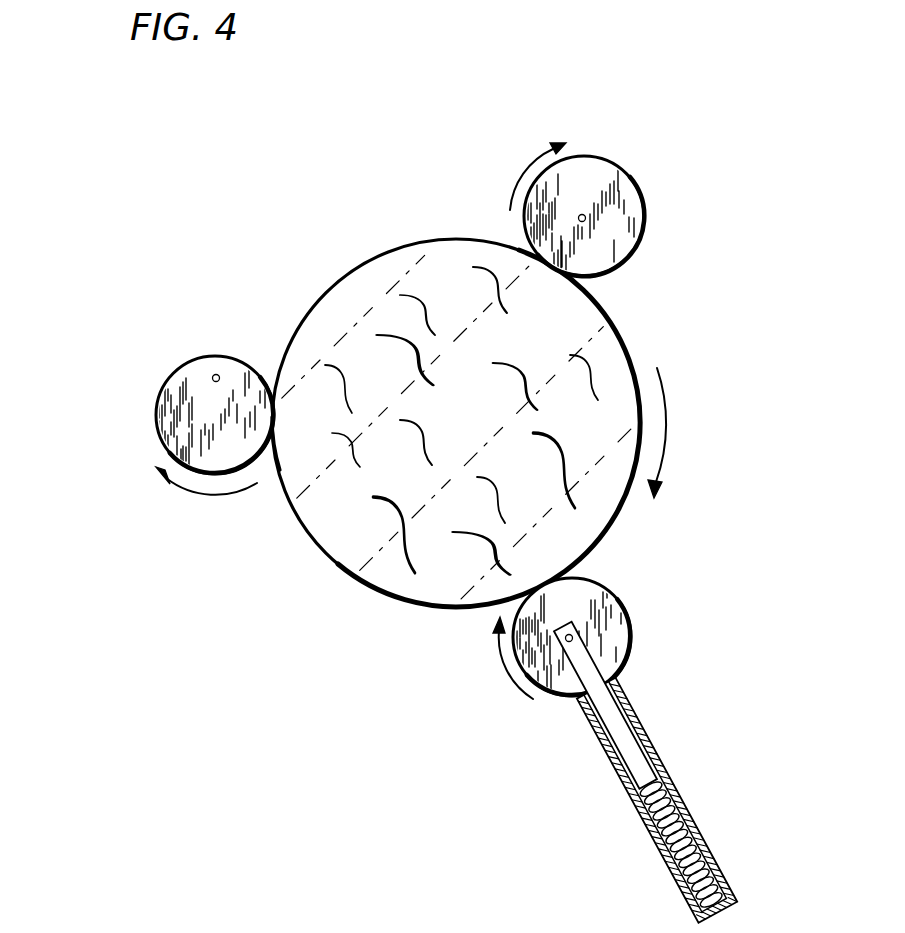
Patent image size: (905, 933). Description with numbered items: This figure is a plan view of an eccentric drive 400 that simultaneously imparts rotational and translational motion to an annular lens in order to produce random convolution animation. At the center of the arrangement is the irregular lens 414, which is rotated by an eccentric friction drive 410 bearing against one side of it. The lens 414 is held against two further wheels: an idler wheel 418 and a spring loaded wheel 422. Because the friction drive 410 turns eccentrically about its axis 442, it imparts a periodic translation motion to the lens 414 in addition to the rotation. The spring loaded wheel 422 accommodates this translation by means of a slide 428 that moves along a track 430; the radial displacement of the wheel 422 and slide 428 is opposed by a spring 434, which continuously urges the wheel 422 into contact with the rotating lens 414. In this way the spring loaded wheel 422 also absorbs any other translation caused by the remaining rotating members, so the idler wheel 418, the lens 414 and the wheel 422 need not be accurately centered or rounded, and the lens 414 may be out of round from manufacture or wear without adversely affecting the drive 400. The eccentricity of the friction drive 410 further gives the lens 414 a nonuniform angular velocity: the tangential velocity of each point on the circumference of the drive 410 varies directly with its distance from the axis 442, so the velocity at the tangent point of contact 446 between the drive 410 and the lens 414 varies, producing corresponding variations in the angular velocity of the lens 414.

The eccentric drive 400 is at (156, 437).
The eccentric friction drive 410 is at (158, 400).
The lens 414 is at (318, 302).
The idler wheel 418 is at (605, 158).
The spring loaded wheel 422 is at (612, 587).
The slide 428 is at (595, 713).
The track 430 is at (665, 738).
The spring 434 is at (662, 842).
The axis 442 is at (214, 375).
The tangent point of contact 446 is at (268, 448).